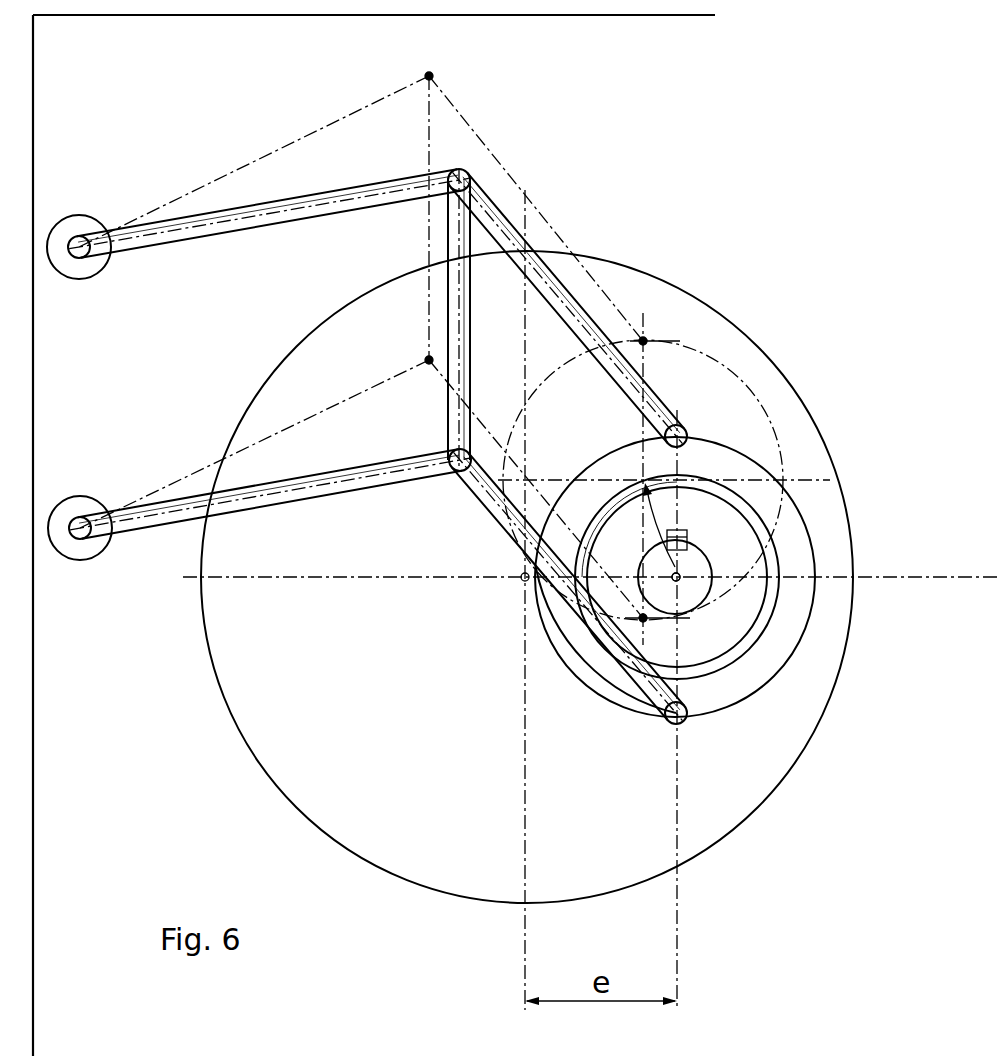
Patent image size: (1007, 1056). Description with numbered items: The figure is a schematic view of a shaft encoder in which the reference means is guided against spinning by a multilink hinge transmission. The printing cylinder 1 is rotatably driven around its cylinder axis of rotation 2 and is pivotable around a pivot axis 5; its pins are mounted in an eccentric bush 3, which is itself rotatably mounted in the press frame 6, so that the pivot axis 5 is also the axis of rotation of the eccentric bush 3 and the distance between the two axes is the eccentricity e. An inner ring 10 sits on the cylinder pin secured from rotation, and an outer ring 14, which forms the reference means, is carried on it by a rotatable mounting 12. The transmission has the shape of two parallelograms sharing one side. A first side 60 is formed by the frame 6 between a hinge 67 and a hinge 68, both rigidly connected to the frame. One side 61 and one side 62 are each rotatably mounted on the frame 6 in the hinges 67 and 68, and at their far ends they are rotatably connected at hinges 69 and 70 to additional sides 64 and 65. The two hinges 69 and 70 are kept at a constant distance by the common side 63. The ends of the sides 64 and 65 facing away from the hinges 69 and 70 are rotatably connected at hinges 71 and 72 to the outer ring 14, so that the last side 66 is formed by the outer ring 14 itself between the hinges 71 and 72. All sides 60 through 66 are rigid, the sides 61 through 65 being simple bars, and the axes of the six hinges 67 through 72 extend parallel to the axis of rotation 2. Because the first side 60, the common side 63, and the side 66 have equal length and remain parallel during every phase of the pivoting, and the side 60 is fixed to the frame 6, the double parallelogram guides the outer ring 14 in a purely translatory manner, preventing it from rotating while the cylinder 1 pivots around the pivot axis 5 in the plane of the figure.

The printing cylinder 1 is at (700, 565).
The cylinder axis of rotation 2 is at (705, 592).
The eccentric bush 3 is at (818, 686).
The pivot axis 5 is at (548, 580).
The press frame 6 is at (33, 85).
The inner ring 10 is at (700, 490).
The rotatable mounting 12 is at (780, 523).
The outer ring 14 is at (577, 643).
The first side 60 is at (539, 541).
The side 61 is at (258, 203).
The side 62 is at (173, 520).
The common side 63 is at (448, 325).
The side 64 is at (553, 273).
The side 65 is at (478, 498).
The last side 66 is at (648, 618).
The hinge 67 is at (77, 243).
The hinge 68 is at (75, 537).
The hinge 69 is at (470, 176).
The hinge 70 is at (458, 472).
The hinge 71 is at (683, 427).
The hinge 72 is at (673, 727).